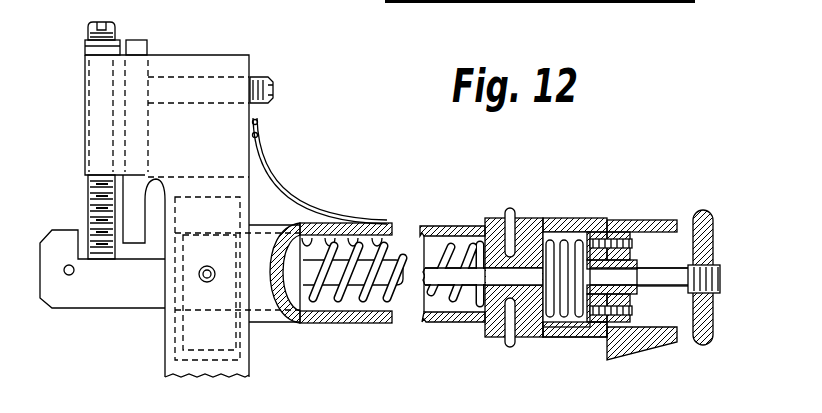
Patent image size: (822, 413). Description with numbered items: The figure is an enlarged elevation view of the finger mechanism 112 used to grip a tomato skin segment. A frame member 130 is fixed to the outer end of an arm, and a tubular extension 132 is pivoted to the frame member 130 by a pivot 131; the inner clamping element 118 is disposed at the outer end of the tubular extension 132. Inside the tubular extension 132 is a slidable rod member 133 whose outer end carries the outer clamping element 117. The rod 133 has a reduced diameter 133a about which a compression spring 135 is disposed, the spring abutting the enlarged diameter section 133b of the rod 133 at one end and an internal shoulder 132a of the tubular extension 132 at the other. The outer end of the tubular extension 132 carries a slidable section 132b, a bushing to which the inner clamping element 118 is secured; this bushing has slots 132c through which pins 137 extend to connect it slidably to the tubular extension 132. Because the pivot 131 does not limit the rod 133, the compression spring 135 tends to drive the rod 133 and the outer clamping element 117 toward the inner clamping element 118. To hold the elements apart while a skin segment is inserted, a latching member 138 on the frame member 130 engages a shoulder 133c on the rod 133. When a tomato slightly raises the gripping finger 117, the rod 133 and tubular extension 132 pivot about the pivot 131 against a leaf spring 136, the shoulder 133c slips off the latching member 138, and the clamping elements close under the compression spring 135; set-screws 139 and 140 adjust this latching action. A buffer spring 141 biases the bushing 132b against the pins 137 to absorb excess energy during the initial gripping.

The finger mechanism 112 is at (447, 168).
The outer clamping element 117 is at (715, 228).
The inner clamping element 118 is at (658, 220).
The frame member 130 is at (245, 158).
The pivot 131 is at (207, 281).
The tubular extension 132 is at (343, 223).
The internal shoulder 132a is at (472, 233).
The slidable section 132b is at (577, 337).
The slots 132c is at (528, 220).
The slidable rod member 133 is at (132, 308).
The reduced diameter 133a is at (425, 283).
The enlarged diameter section 133b is at (295, 300).
The shoulder 133c is at (147, 240).
The compression spring 135 is at (333, 300).
The leaf spring 136 is at (290, 198).
The pins 137 is at (511, 207).
The latching member 138 is at (133, 192).
The set-screw 139 is at (274, 84).
The set-screw 140 is at (87, 35).
The buffer spring 141 is at (567, 235).